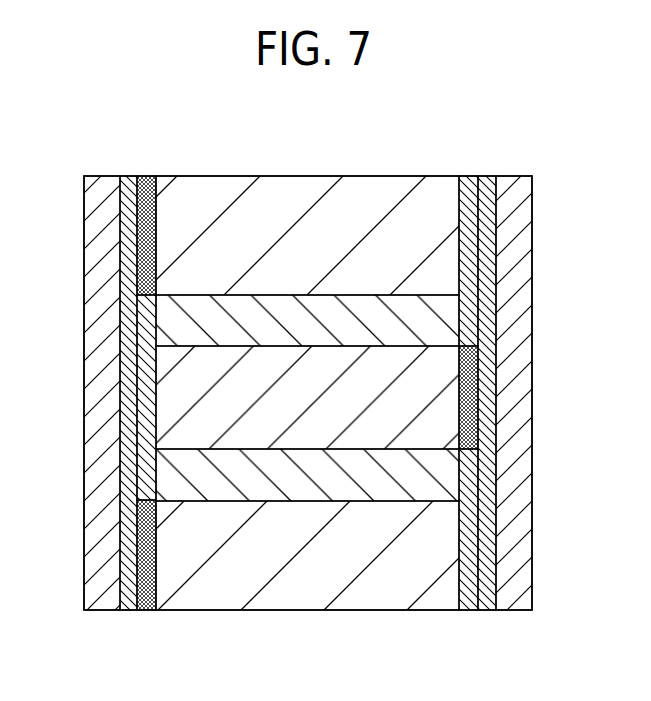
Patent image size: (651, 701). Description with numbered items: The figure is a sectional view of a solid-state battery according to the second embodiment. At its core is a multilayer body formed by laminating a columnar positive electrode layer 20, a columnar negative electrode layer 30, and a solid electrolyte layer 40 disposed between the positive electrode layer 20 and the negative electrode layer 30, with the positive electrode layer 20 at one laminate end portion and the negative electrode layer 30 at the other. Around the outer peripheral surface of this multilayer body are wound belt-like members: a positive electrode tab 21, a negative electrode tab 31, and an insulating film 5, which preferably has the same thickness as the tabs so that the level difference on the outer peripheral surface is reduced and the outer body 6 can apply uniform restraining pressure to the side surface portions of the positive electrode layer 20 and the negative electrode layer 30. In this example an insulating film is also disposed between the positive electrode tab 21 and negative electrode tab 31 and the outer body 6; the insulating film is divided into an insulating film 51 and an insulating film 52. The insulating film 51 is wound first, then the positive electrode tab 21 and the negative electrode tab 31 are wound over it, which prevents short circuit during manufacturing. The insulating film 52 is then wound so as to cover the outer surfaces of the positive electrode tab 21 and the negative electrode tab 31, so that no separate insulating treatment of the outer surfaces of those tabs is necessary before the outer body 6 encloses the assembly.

The insulating film 5 is at (122, 462).
The outer body 6 is at (105, 242).
The positive electrode layer 20 is at (350, 190).
The positive electrode tab 21 is at (148, 178).
The negative electrode layer 30 is at (185, 388).
The negative electrode tab 31 is at (477, 412).
The solid electrolyte layer 40 is at (448, 322).
The insulating film 51 is at (468, 178).
The insulating film 52 is at (487, 178).